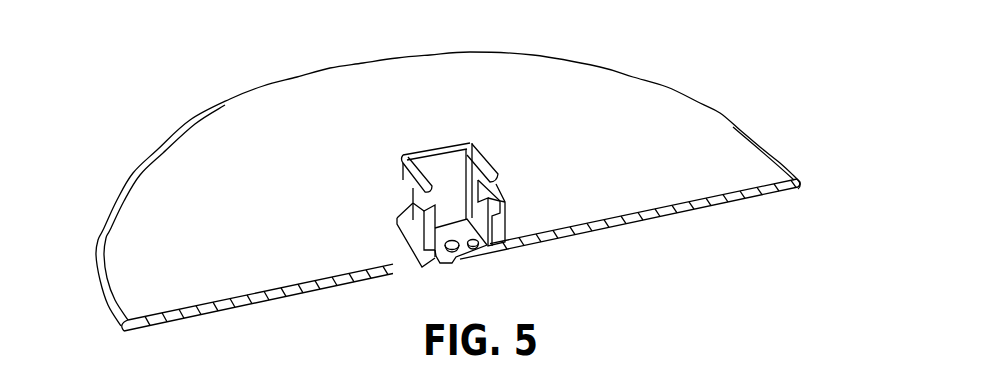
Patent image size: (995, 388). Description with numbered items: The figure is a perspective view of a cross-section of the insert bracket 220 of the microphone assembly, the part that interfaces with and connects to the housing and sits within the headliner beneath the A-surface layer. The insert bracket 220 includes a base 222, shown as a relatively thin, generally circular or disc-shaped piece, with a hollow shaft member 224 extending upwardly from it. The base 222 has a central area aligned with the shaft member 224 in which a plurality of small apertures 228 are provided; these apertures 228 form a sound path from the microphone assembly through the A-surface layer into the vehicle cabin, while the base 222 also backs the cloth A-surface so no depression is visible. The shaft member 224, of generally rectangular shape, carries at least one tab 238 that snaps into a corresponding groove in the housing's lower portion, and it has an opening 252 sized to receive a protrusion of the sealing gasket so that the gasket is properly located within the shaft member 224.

The insert bracket 220 is at (221, 72).
The base 222 is at (653, 123).
The hollow shaft member 224 is at (449, 160).
The opening 252 is at (418, 194).
The tab 238 is at (504, 207).
The apertures 228 is at (441, 247).